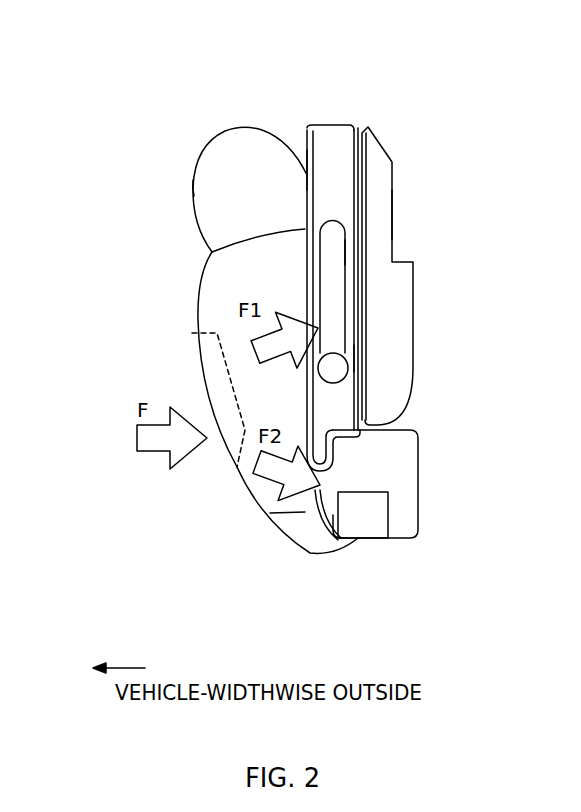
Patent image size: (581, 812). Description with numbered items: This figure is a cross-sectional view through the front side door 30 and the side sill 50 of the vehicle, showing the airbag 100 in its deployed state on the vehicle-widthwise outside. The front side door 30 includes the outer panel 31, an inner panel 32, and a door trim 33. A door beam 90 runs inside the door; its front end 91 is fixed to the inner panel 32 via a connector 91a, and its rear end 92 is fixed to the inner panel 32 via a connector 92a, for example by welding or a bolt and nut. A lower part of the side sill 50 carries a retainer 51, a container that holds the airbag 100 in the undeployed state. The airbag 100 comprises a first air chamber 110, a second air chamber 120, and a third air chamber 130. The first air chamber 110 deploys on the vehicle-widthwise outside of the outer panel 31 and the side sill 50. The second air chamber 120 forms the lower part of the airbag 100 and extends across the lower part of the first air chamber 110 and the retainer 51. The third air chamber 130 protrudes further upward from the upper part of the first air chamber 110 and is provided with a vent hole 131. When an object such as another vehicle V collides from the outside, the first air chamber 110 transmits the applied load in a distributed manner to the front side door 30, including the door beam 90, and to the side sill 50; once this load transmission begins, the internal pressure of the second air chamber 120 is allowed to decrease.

The airbag 100 is at (180, 130).
The first air chamber 110 is at (200, 350).
The second air chamber 120 is at (282, 537).
The third air chamber 130 is at (195, 187).
The vent hole 131 is at (185, 193).
The front side door 30 is at (318, 121).
The outer panel 31 is at (309, 168).
The inner panel 32 is at (356, 187).
The door trim 33 is at (391, 212).
The side sill 50 is at (418, 477).
The retainer 51 is at (387, 520).
The door beam 90 is at (345, 313).
The front end 91 is at (345, 238).
The connector 91a is at (353, 252).
The rear end 92 is at (343, 370).
The connector 92a is at (355, 358).
The another vehicle V is at (236, 500).